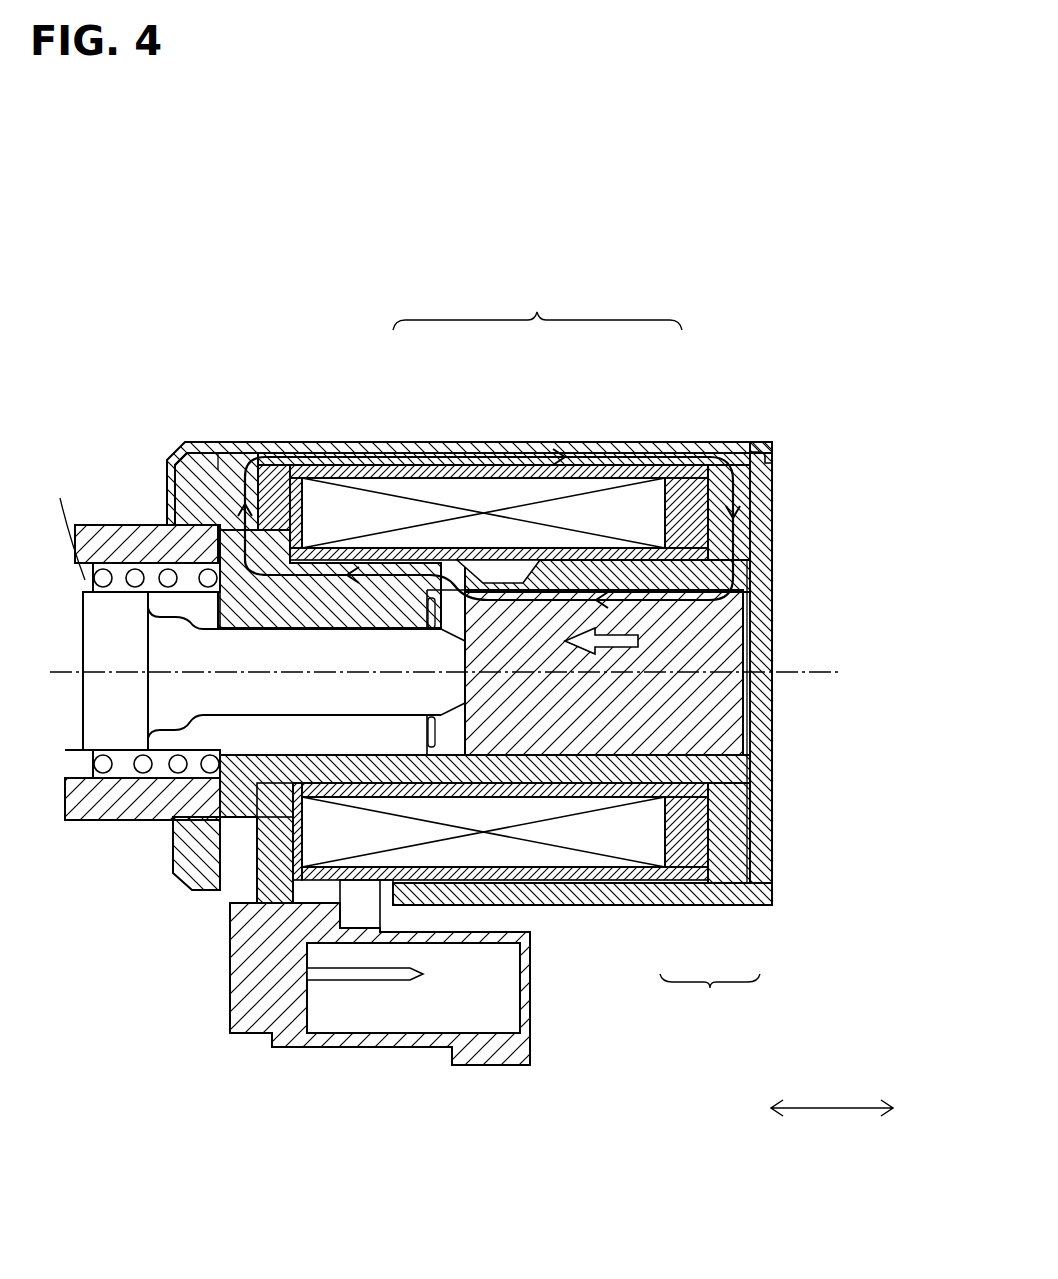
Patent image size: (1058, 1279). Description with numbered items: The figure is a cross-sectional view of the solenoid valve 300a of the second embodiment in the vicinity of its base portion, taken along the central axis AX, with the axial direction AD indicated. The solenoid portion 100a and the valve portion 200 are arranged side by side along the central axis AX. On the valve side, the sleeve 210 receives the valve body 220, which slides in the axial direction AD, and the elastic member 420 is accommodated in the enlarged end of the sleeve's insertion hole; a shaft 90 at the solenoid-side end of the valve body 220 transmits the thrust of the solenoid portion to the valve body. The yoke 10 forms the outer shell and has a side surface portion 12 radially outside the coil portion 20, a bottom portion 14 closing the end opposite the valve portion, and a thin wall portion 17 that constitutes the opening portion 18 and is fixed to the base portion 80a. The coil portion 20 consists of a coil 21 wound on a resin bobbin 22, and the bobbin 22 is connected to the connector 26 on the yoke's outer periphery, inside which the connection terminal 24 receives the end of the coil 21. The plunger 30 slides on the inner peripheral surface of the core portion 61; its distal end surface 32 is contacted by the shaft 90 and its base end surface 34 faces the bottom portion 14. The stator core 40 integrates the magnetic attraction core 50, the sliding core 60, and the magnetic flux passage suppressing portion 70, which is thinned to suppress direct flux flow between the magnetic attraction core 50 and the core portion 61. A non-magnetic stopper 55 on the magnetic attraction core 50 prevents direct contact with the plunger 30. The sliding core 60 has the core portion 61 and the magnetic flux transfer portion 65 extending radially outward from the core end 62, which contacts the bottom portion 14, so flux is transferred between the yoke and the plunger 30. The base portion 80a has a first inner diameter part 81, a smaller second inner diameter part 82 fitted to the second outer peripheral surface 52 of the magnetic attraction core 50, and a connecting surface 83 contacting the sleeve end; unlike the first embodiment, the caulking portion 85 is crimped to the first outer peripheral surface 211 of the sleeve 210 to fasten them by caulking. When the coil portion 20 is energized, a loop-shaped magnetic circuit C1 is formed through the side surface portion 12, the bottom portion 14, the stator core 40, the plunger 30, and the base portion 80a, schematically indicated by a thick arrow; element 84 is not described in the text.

The yoke 10 is at (798, 425).
The side surface portion 12 is at (349, 461).
The bottom portion 14 is at (772, 560).
The thin wall portion 17 is at (223, 448).
The opening portion 18 is at (206, 442).
The coil portion 20 is at (710, 997).
The coil 21 is at (628, 880).
The bobbin 22 is at (698, 880).
The connection terminal 24 is at (382, 976).
The connector 26 is at (540, 1061).
The plunger 30 is at (745, 736).
The distal end surface 32 is at (418, 577).
The base end surface 34 is at (770, 690).
The stator core 40 is at (537, 304).
The magnetic attraction core 50 is at (385, 600).
The second outer peripheral surface 52 is at (297, 478).
The stopper 55 is at (460, 755).
The sliding core 60 is at (691, 540).
The core portion 61 is at (772, 632).
The core end 62 is at (772, 613).
The magnetic flux transfer portion 65 is at (772, 502).
The magnetic flux passage suppressing portion 70 is at (470, 590).
The base portion 80a is at (158, 967).
The first inner diameter part 81 is at (190, 842).
The second inner diameter part 82 is at (255, 690).
The connecting surface 83 is at (248, 775).
The end plate 84 is at (241, 447).
The caulking portion 85 is at (190, 512).
The shaft 90 is at (160, 779).
The solenoid portion 100a is at (785, 302).
The valve portion 200 is at (107, 312).
The sleeve 210 is at (115, 494).
The first outer peripheral surface 211 is at (177, 494).
The valve body 220 is at (120, 712).
The solenoid valve 300a is at (143, 245).
The elastic member 420 is at (113, 428).
The magnetic circuit C1 is at (690, 447).
The central axis AX is at (467, 675).
The axial direction AD is at (818, 1107).